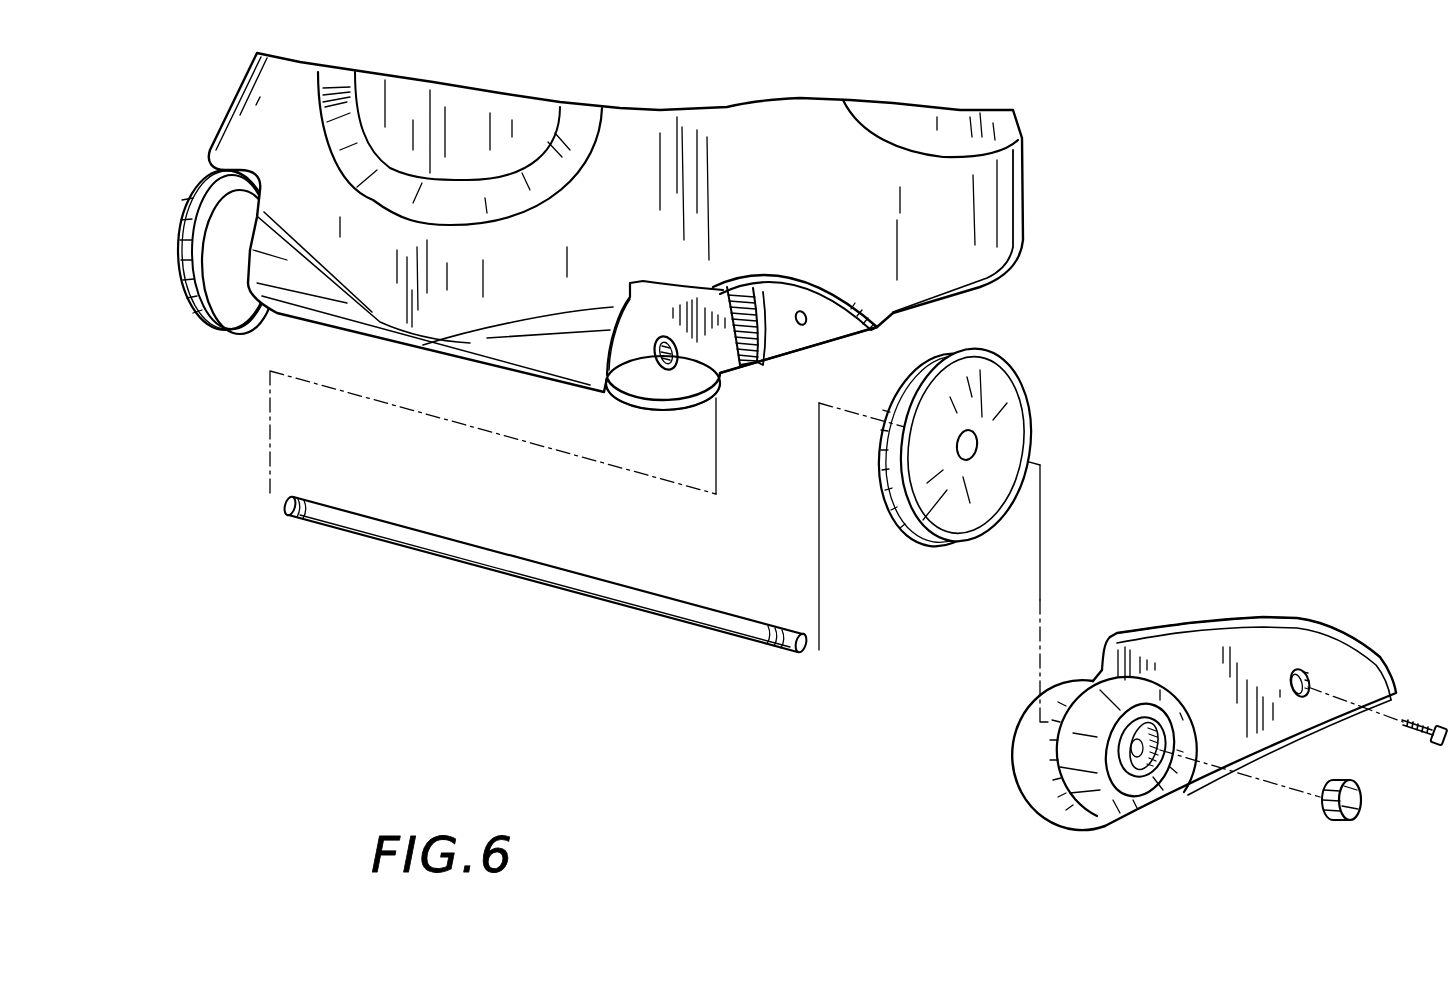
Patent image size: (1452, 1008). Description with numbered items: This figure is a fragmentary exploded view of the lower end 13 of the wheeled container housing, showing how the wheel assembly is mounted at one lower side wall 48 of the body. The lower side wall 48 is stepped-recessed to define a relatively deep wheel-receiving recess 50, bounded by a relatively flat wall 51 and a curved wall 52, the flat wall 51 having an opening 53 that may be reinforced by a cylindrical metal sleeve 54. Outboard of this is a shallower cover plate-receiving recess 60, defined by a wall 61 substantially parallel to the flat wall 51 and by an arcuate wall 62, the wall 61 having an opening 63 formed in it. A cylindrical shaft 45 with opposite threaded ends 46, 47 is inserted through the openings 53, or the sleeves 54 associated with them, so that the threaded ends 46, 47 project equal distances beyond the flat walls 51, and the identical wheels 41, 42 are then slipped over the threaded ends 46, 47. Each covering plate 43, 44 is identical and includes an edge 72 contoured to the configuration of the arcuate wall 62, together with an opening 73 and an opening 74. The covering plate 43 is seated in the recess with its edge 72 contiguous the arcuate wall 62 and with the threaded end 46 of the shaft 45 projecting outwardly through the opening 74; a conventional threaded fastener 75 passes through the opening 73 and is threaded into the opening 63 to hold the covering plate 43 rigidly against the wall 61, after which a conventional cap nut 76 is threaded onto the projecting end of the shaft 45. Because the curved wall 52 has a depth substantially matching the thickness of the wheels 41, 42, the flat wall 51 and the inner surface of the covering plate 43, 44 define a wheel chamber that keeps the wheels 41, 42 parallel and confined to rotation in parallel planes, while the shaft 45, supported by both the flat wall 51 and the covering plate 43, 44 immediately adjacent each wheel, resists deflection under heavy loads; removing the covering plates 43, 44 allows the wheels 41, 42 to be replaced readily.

The lower end 13 is at (274, 149).
The wheel 41 is at (1012, 430).
The wheel 42 is at (230, 314).
The covering plate 43 is at (1180, 668).
The covering plate 44 is at (179, 256).
The shaft 45 is at (498, 560).
The threaded end 46 is at (784, 652).
The threaded end 47 is at (298, 490).
The lower side wall 48 is at (838, 168).
The wheel-receiving recess 50 is at (651, 378).
The flat wall 51 is at (627, 333).
The curved wall 52 is at (726, 290).
The opening 53 is at (698, 368).
The cylindrical metal sleeve 54 is at (611, 372).
The cover plate-receiving recess 60 is at (786, 330).
The wall 61 is at (774, 298).
The arcuate wall 62 is at (851, 303).
The opening 63 is at (803, 311).
The edge 72 is at (1284, 620).
The opening 73 is at (1308, 678).
The opening 74 is at (1143, 783).
The threaded fastener 75 is at (1424, 748).
The cap nut 76 is at (1342, 822).